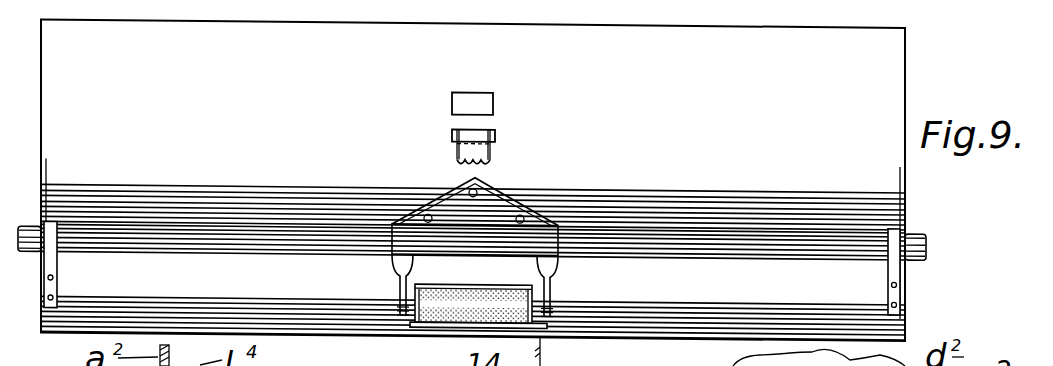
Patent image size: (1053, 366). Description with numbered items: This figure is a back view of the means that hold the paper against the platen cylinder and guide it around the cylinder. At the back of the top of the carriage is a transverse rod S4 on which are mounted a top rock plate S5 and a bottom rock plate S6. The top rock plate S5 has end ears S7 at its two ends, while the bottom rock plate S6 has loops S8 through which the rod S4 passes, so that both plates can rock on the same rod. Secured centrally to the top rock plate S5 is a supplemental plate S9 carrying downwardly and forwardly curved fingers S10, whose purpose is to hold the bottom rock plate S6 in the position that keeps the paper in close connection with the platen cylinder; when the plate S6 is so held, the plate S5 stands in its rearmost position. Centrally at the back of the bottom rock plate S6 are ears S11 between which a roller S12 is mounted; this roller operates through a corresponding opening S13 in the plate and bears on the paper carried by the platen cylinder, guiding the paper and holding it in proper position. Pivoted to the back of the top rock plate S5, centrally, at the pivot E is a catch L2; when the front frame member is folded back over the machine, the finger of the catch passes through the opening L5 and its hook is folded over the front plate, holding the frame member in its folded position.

The top rock plate S5 is at (279, 86).
The transverse rod S4 is at (253, 238).
The bottom rock plate S6 is at (313, 294).
The end ears S7 is at (932, 201).
The loops S8 is at (57, 260).
The supplemental plate S9 is at (481, 210).
The downwardly and forwardly curved fingers S10 is at (607, 273).
The ears S11 is at (627, 353).
The roller S12 is at (447, 323).
The opening S13 is at (484, 267).
The opening (designated t5 in the text) L5 is at (493, 88).
The pivot (designated t in the text) E is at (496, 128).
The catch (designated t2 in the text) L2 is at (486, 160).